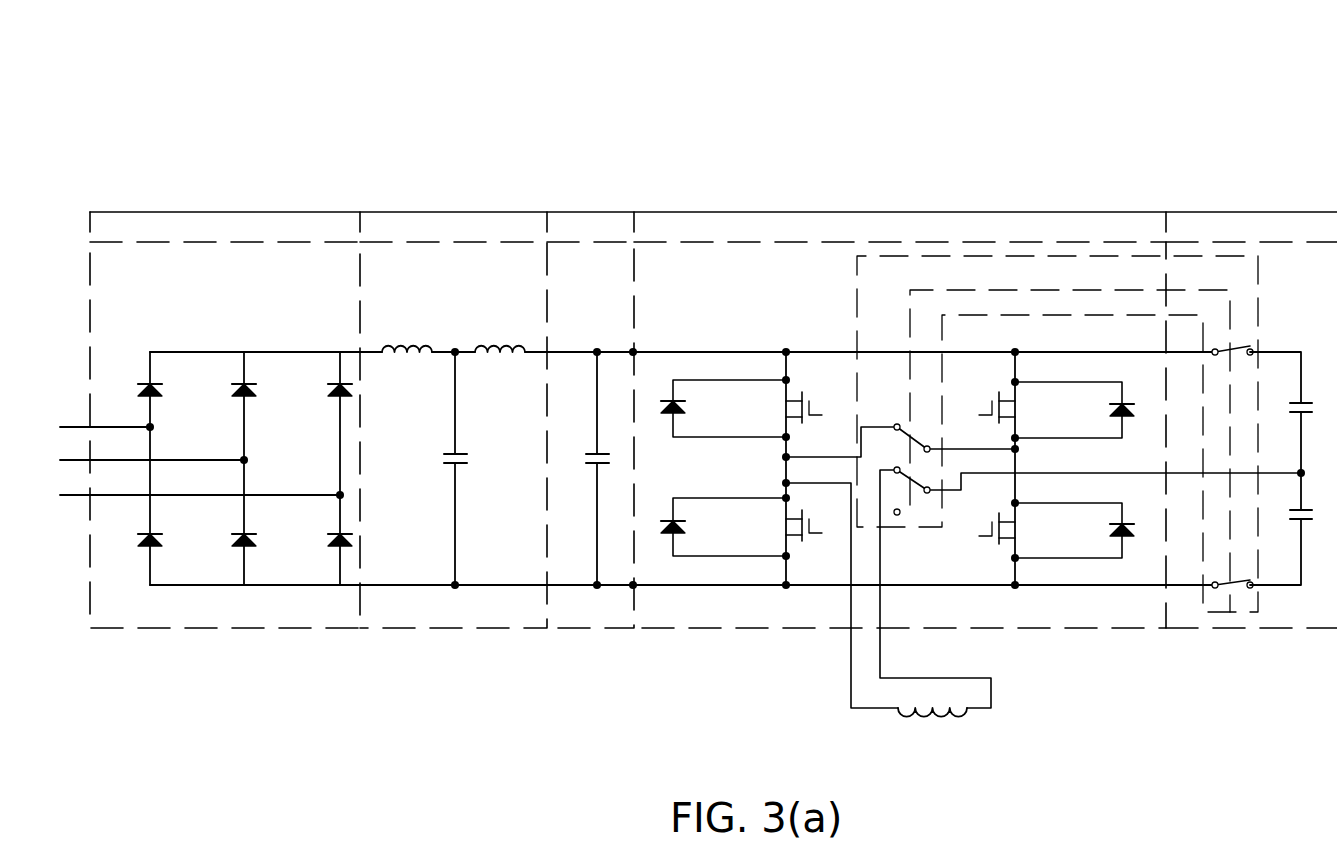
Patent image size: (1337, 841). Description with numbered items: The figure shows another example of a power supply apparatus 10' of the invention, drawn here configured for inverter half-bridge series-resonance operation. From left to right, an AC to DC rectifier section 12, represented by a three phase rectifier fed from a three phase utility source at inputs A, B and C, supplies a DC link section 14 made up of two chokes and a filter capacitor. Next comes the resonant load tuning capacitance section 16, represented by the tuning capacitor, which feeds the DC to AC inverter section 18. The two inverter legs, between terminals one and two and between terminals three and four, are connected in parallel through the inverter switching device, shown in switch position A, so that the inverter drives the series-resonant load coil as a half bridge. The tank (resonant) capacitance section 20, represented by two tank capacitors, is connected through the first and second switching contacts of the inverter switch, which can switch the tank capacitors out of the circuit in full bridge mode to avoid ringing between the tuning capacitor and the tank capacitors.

The power supply apparatus 10' is at (688, 389).
The AC to DC rectifier section 12 is at (225, 212).
The DC (link) section 14 is at (455, 212).
The resonant load tuning capacitance section 16 is at (590, 212).
The DC to AC inverter section 18 is at (900, 212).
The tank (resonant) capacitance section 20 is at (1258, 212).